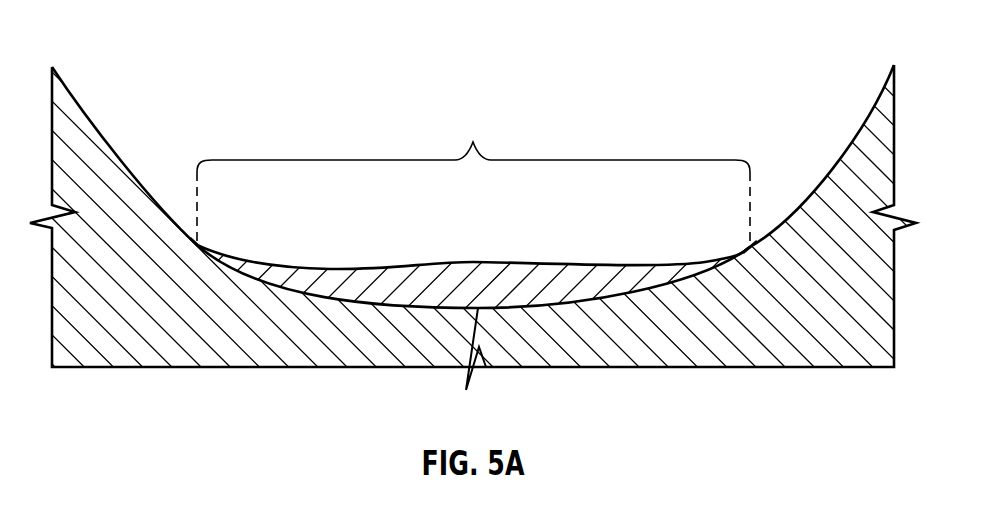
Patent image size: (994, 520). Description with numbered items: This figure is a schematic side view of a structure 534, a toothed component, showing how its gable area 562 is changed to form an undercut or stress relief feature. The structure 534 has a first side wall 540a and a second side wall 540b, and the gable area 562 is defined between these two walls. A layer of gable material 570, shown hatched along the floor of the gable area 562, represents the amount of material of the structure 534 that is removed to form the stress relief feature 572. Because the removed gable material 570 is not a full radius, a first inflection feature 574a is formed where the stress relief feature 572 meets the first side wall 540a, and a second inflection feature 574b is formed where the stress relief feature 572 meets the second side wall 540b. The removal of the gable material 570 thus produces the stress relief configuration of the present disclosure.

The structure 534 is at (148, 38).
The first side wall 540a is at (93, 161).
The second side wall 540b is at (857, 163).
The gable area 562 is at (473, 178).
The gable material 570 is at (565, 277).
The stress relief feature 572 is at (478, 308).
The first inflection feature 574a is at (198, 244).
The second inflection feature 574b is at (749, 245).